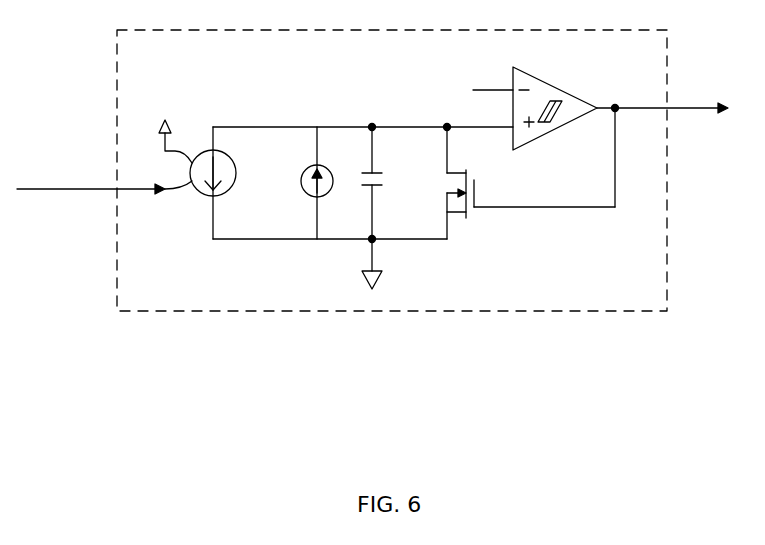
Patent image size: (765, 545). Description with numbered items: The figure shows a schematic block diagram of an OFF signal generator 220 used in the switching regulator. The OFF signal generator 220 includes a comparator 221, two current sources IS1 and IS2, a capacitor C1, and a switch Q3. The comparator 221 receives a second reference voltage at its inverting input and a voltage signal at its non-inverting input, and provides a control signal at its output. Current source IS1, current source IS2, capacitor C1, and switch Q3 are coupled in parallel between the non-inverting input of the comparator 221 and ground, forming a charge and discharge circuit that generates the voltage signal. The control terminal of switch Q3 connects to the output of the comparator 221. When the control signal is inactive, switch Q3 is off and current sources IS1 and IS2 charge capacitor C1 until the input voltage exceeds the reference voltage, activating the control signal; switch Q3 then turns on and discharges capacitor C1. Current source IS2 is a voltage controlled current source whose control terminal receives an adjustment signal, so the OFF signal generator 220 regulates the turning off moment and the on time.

The OFF signal generator 220 is at (560, 299).
The comparator 221 is at (553, 83).
The current source IS1 is at (301, 183).
The current source IS2 is at (199, 183).
The capacitor C1 is at (394, 183).
The switch Q3 is at (531, 173).